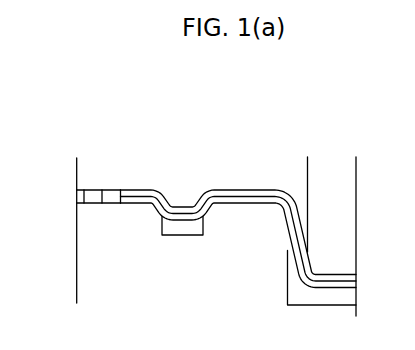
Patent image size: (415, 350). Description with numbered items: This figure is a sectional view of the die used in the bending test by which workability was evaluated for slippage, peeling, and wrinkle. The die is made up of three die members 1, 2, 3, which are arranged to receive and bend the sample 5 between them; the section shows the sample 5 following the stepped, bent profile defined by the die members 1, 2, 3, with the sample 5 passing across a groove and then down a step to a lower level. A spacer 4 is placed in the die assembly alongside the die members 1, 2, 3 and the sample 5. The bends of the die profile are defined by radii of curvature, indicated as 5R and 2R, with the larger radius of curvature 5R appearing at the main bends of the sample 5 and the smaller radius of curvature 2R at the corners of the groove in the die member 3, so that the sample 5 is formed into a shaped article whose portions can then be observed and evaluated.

The die member 1 is at (93, 170).
The die member 2 is at (325, 170).
The die member 3 is at (82, 247).
The spacer 4 is at (94, 197).
The sample 5 is at (138, 188).
The radius of curvature 5R is at (183, 205).
The radius of curvature 2R is at (157, 210).